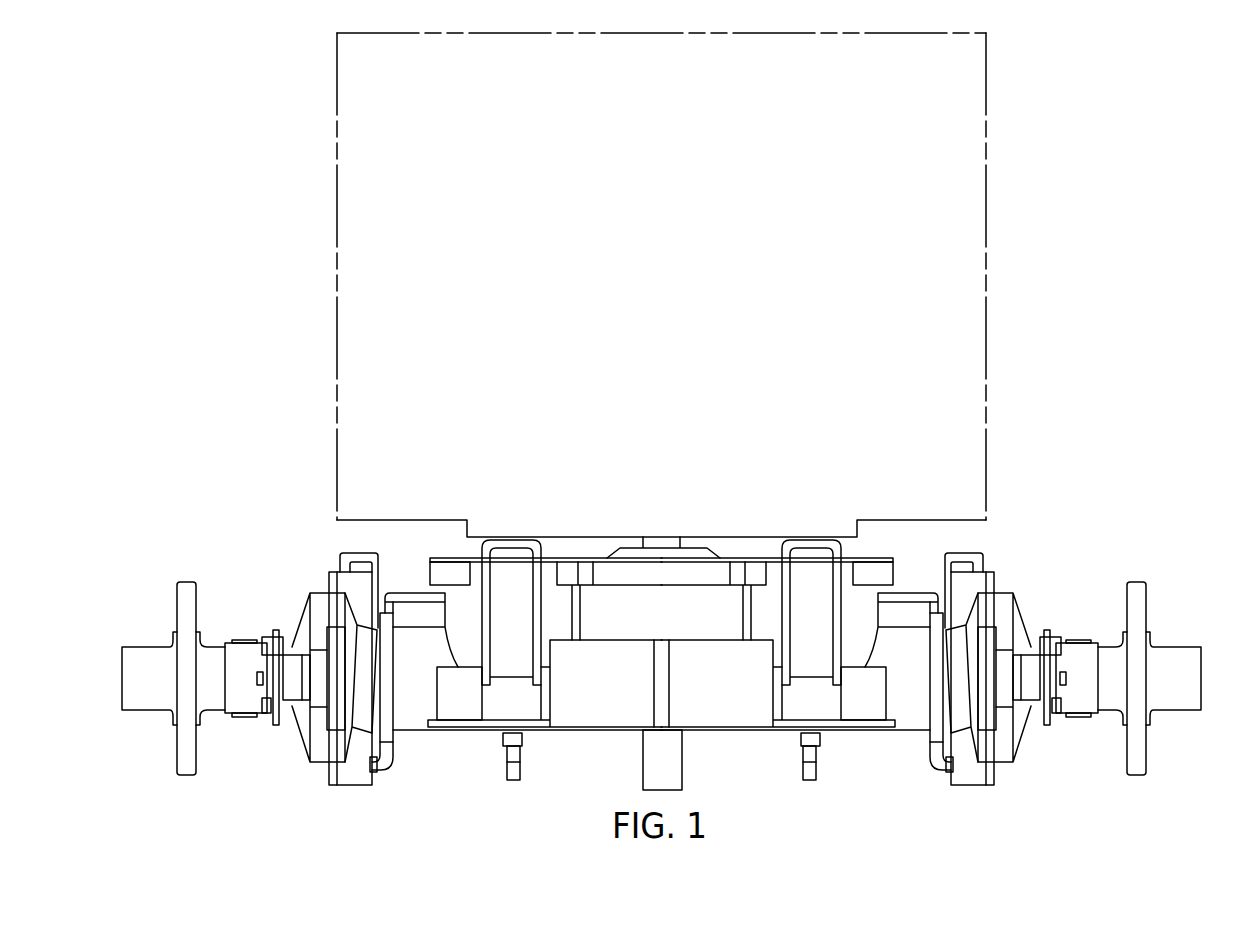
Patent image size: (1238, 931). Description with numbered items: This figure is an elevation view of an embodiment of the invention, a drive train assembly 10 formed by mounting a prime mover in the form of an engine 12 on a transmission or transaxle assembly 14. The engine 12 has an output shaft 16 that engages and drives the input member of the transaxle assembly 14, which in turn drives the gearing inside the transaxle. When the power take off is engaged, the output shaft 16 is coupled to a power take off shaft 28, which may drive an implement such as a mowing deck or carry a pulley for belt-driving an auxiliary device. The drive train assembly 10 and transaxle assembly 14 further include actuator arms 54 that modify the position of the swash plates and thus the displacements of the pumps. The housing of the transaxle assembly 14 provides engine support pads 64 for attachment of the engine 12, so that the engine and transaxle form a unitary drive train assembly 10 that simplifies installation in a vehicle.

The drive train assembly 10 is at (203, 147).
The engine 12 is at (673, 290).
The transaxle assembly 14 is at (228, 511).
The output shaft 16 is at (650, 544).
The power take off shaft 28 is at (674, 770).
The actuator arms 54 is at (522, 748).
The engine support pads 64 is at (512, 540).